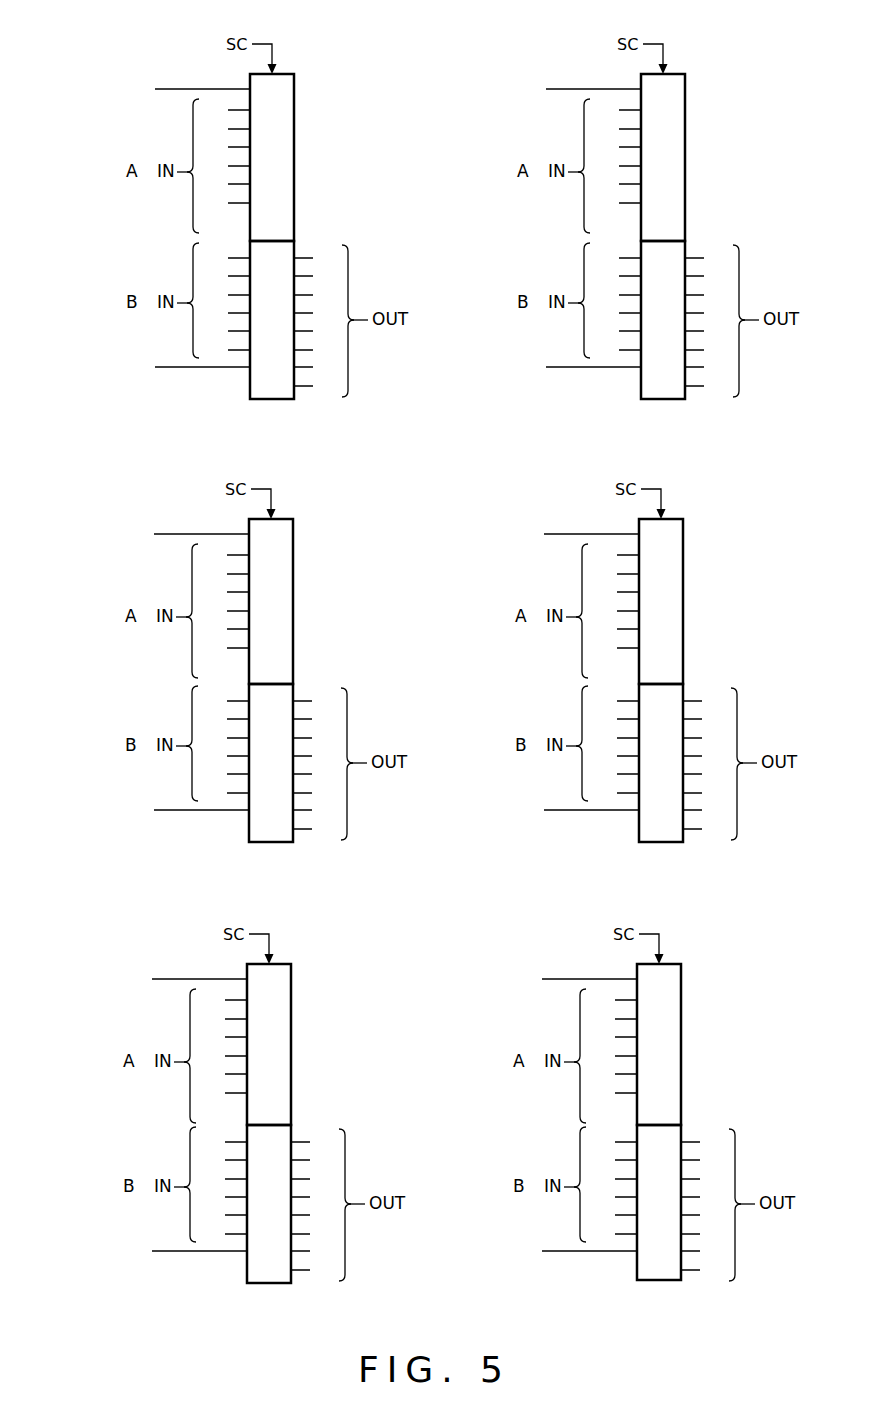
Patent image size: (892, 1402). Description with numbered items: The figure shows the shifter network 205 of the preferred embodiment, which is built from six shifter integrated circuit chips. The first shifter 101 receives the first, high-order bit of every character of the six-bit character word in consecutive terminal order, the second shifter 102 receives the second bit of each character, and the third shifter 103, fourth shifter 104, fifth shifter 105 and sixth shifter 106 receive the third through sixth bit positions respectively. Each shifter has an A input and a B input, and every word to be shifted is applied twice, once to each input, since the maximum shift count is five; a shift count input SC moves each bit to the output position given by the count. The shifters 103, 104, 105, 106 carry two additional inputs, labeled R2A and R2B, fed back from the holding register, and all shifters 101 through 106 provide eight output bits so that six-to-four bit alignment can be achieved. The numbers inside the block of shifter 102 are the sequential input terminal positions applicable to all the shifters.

The first shifter 101 is at (267, 235).
The second shifter 102 is at (658, 235).
The third shifter 103 is at (260, 679).
The fourth shifter 104 is at (650, 679).
The fifth shifter 105 is at (258, 1122).
The sixth shifter 106 is at (648, 1121).
The shifter network 205 is at (429, 72).